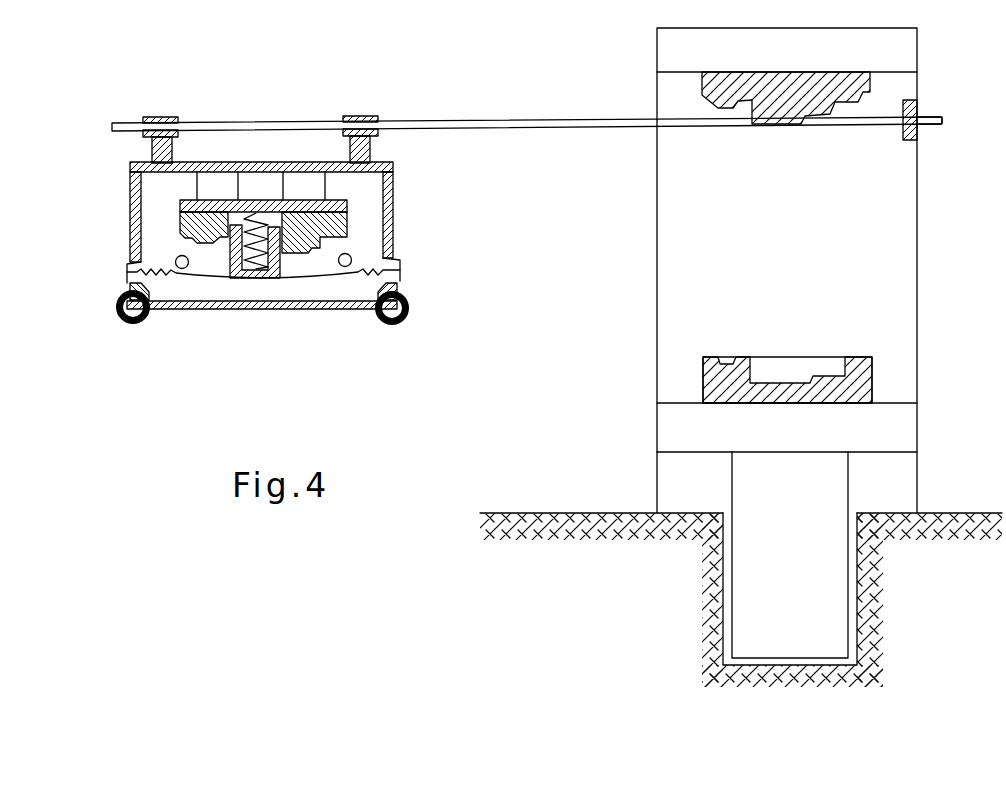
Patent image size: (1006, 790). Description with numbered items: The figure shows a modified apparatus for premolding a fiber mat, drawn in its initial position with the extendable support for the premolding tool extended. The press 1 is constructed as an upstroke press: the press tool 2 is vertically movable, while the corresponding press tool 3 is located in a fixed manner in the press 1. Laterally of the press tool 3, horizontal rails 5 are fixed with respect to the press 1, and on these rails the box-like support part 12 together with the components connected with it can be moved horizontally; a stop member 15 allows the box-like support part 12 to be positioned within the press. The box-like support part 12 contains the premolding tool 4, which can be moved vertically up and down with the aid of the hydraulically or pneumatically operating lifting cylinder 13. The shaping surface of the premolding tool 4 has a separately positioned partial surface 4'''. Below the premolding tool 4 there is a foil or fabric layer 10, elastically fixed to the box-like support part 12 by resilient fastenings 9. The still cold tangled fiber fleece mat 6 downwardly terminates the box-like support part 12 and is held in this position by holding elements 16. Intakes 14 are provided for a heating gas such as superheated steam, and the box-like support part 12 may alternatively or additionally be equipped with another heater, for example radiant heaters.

The press 1 is at (668, 55).
The press tool 2 is at (862, 383).
The press tool 3 is at (713, 92).
The horizontal rails 5 is at (935, 128).
The stop member 15 is at (912, 106).
The lifting cylinder 13 is at (303, 187).
The box-like support part 12 is at (393, 185).
The premolding tool 4 is at (262, 230).
The partial surface 4''' is at (265, 294).
The intakes 14 is at (175, 260).
The foil or fabric layer 10 is at (188, 275).
The resilient fastenings 9 is at (162, 280).
The fiber mat 6 is at (238, 310).
The holding elements 16 is at (119, 306).